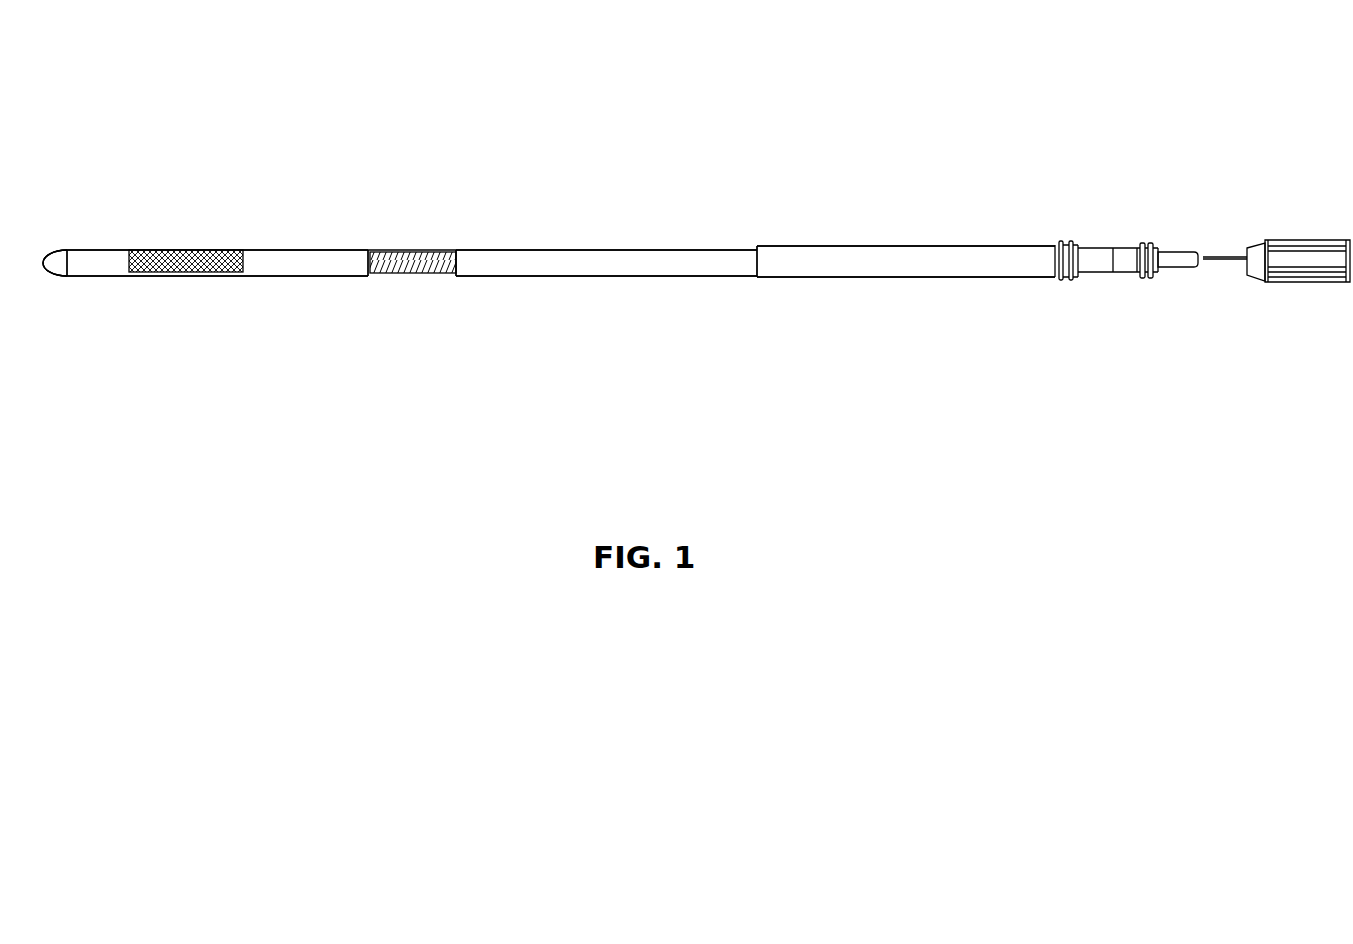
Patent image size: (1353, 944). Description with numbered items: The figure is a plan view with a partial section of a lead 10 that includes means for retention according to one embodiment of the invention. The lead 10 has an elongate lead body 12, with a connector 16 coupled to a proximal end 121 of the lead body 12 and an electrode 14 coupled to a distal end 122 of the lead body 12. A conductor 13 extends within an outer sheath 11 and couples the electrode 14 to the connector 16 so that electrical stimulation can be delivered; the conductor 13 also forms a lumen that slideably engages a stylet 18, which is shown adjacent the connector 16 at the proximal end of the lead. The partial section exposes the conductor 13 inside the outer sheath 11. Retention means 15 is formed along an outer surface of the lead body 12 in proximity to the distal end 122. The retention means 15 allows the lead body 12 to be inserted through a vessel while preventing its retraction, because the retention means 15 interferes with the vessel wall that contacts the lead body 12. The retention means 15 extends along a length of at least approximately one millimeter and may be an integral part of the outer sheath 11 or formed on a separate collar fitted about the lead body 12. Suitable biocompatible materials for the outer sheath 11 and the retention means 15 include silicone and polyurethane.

The lead 10 is at (620, 117).
The outer sheath 11 is at (366, 250).
The lead body 12 is at (483, 265).
The conductor 13 is at (408, 256).
The electrode 14 is at (52, 270).
The retention means 15 is at (199, 250).
The connector 16 is at (1197, 240).
The stylet 18 is at (1262, 287).
The proximal end 121 is at (740, 277).
The distal end 122 is at (95, 298).